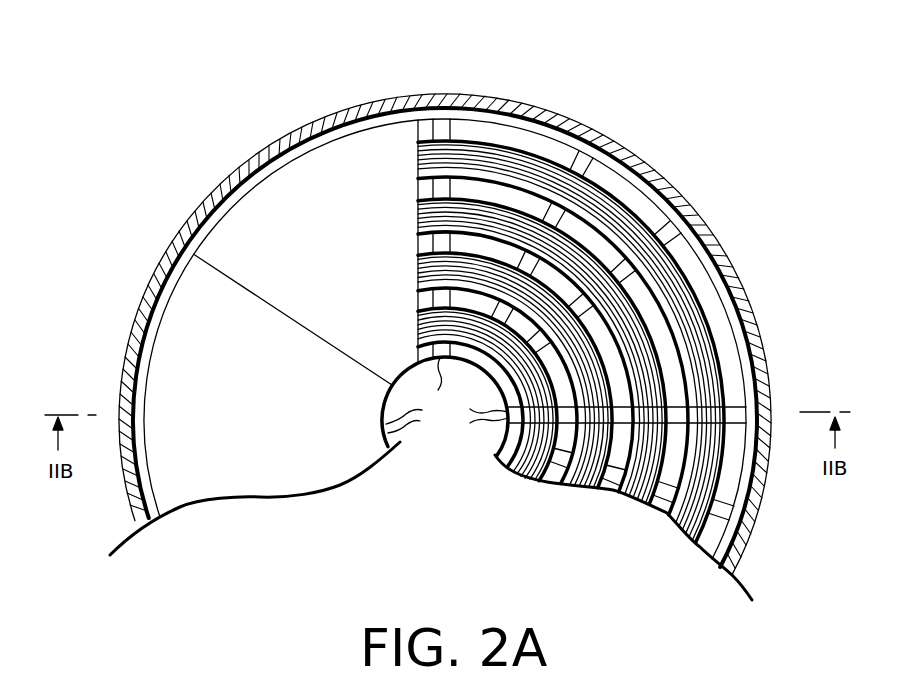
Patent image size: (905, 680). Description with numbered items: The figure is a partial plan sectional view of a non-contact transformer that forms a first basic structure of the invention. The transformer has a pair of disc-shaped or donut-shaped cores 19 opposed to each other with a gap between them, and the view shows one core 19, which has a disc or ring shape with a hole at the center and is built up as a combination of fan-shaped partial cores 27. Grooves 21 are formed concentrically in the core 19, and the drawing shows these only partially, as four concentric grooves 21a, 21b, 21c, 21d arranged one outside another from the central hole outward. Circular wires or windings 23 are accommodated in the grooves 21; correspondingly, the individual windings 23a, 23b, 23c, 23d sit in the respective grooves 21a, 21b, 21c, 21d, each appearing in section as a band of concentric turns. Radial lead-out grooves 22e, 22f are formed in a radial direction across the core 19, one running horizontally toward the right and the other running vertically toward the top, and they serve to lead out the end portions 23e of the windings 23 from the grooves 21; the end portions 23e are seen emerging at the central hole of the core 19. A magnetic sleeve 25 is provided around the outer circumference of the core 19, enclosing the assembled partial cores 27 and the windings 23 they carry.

The core 19 is at (268, 467).
The grooves 21 is at (665, 558).
The first bobbin 21a is at (513, 477).
The second bobbin 21b is at (583, 483).
The third bobbin 21c is at (637, 500).
The fourth bobbin 21d is at (680, 523).
The radial slit 22e is at (737, 405).
The radial slit 22f is at (418, 128).
The windings 23 is at (760, 69).
The first coil 23a is at (467, 322).
The second coil 23b is at (520, 300).
The third coil 23c is at (578, 287).
The fourth coil 23d is at (642, 235).
The end portions 23e is at (483, 400).
The magnetic sleeve 25 is at (262, 147).
The partial cores 27 is at (346, 168).